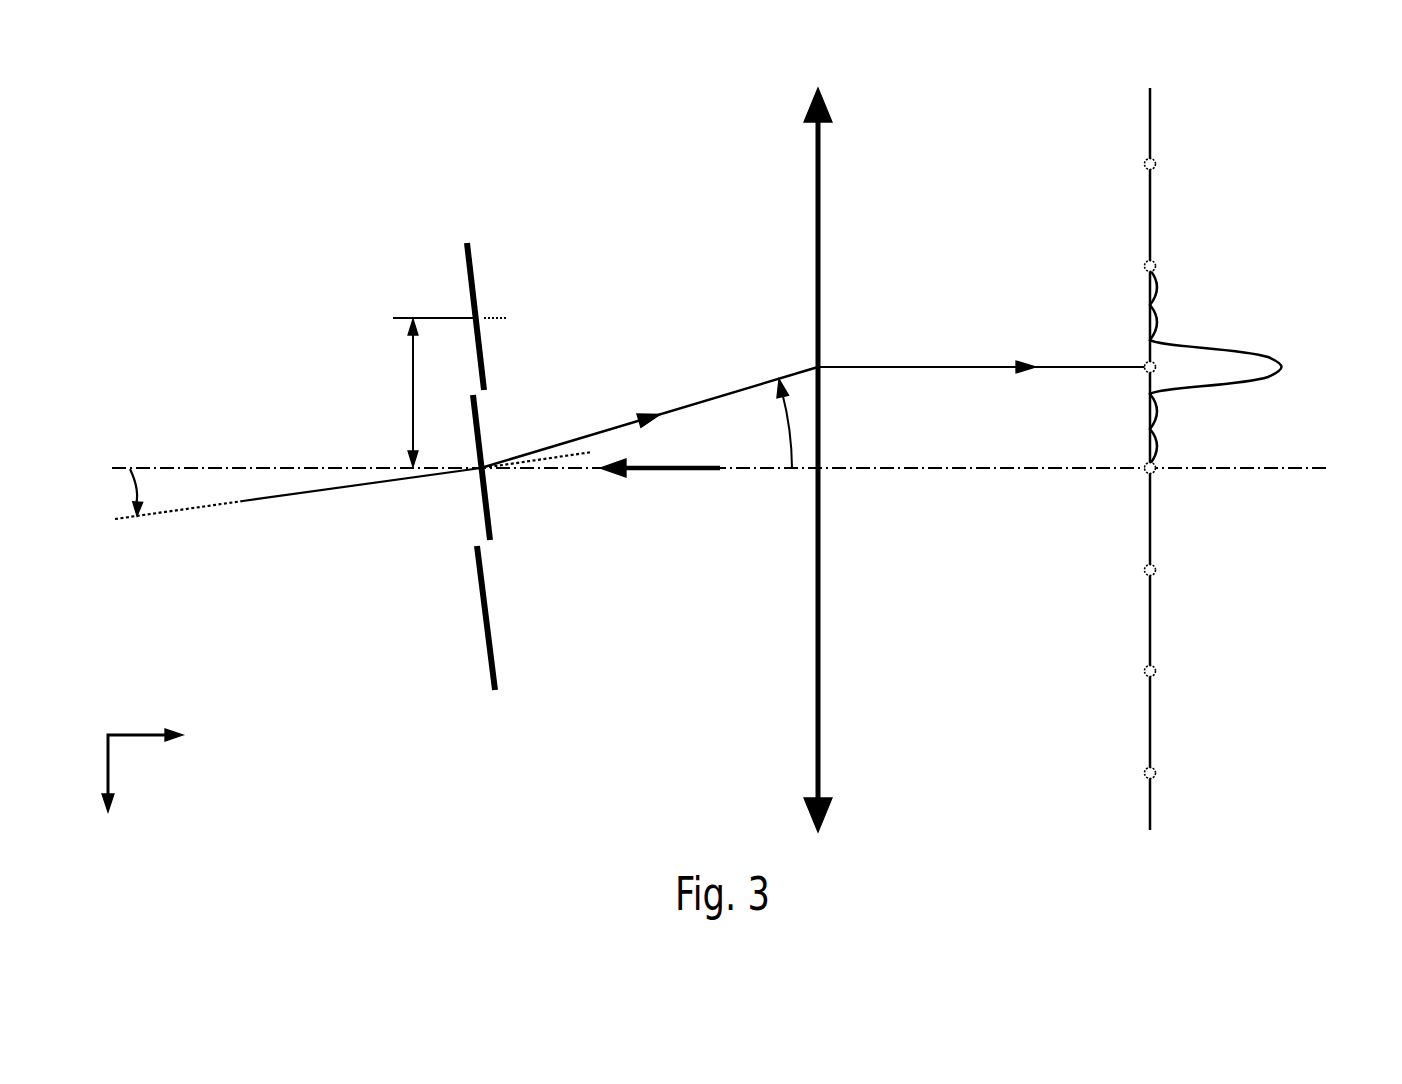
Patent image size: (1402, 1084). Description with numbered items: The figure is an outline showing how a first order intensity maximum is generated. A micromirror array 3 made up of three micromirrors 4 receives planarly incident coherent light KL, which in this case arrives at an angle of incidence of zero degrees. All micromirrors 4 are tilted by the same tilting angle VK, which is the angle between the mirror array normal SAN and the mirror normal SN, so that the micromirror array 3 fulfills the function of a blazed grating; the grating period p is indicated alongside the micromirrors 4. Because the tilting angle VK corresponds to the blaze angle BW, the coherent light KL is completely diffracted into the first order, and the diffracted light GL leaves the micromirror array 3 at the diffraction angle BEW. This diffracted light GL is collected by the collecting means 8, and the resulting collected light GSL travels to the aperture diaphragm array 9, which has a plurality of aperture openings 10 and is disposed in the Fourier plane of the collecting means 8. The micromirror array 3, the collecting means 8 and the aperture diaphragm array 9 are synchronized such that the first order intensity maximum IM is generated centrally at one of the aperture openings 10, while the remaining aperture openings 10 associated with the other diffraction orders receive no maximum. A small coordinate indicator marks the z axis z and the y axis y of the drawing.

The micromirror array 3 is at (455, 224).
The micromirrors 4 is at (466, 263).
The collecting means 8 is at (822, 155).
The aperture diaphragm array 9 is at (1153, 100).
The aperture openings 10 is at (1140, 156).
The grating period p is at (440, 392).
The mirror normal SN is at (285, 497).
The tilting angle VK is at (122, 500).
The blaze angle BW is at (125, 487).
The diffracted light GL is at (705, 400).
The diffraction angle BEW is at (789, 424).
The coherent light KL is at (676, 472).
The mirror array normal SAN is at (551, 472).
The collected light GSL is at (918, 366).
The intensity maximum IM is at (1243, 350).
The z axis z is at (145, 750).
The y axis y is at (96, 798).